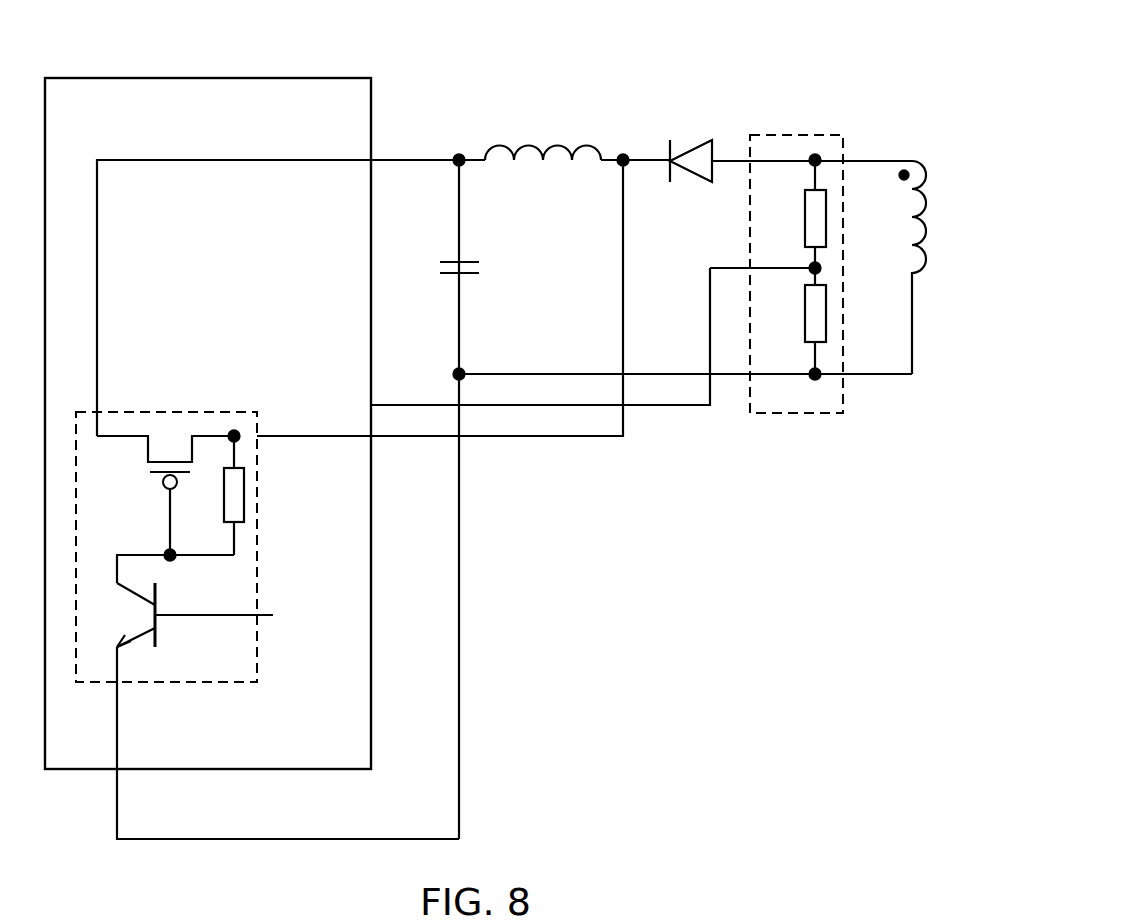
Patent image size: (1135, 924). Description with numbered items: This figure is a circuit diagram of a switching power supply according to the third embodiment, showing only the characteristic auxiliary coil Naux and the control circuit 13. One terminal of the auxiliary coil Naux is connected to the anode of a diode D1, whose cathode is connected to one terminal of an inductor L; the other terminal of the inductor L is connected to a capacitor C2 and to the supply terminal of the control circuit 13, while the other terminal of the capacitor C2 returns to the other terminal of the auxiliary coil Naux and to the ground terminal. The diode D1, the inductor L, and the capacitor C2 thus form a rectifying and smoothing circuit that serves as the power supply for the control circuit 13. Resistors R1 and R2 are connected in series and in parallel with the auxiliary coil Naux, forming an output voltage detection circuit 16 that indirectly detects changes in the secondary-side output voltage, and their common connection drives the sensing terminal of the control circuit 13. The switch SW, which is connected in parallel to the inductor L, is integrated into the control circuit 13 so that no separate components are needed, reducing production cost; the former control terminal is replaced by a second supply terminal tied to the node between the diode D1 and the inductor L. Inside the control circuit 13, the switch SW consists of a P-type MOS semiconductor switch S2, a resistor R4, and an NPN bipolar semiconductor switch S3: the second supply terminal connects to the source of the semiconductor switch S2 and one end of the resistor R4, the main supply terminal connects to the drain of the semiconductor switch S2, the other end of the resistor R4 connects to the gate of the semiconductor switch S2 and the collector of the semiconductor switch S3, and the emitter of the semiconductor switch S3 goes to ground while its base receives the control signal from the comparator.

The control circuit 13 is at (203, 78).
The output voltage detection circuit 16 is at (793, 135).
The switch SW is at (257, 548).
The semiconductor switch S2 is at (165, 495).
The semiconductor switch S3 is at (218, 615).
The resistor R4 is at (215, 495).
The capacitor C2 is at (447, 253).
The inductor L is at (577, 137).
The diode D1 is at (742, 145).
The resistor R1 is at (797, 214).
The resistor R2 is at (797, 321).
The auxiliary coil Naux is at (870, 267).